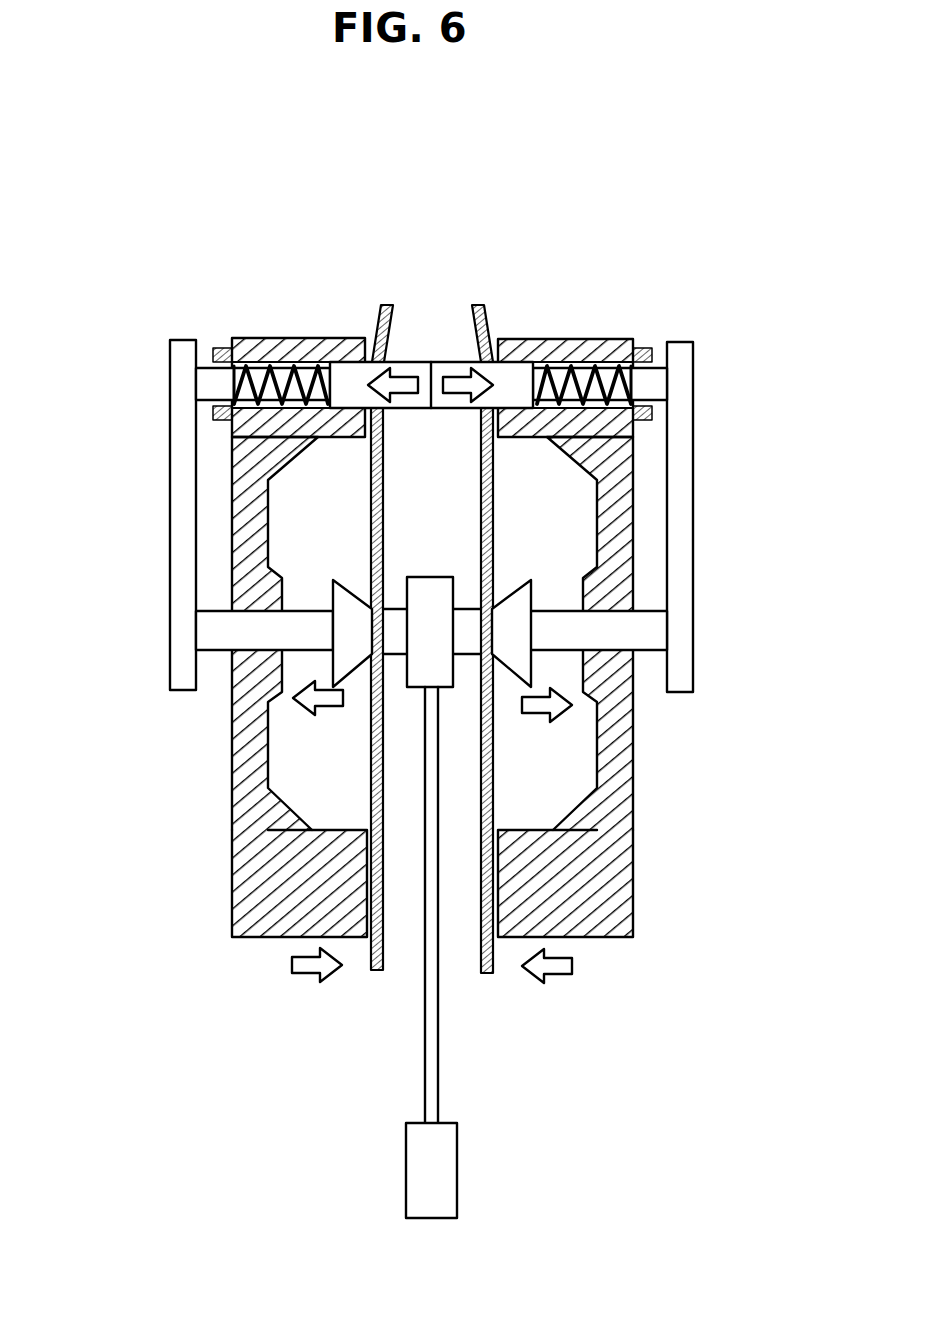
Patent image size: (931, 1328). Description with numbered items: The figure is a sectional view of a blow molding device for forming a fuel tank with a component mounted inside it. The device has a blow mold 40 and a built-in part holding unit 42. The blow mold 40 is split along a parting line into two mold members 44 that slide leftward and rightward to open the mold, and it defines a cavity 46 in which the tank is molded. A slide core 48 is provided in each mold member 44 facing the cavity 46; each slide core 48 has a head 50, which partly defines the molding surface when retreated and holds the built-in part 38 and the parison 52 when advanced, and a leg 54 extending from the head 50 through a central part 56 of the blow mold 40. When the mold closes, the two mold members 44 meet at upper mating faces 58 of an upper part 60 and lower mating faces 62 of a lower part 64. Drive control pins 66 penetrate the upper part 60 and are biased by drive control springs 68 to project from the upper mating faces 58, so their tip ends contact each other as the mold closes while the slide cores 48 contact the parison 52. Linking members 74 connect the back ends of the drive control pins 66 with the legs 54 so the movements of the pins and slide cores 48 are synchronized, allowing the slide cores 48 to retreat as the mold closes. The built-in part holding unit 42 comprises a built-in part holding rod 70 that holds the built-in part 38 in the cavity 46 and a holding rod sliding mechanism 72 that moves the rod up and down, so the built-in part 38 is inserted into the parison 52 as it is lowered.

The built-in part 38 is at (432, 586).
The blow mold 40 is at (438, 689).
The built-in part holding unit 42 is at (303, 1110).
The mold members 44 is at (440, 633).
The cavity 46 is at (675, 717).
The slide core 48 is at (778, 540).
The head 50 is at (357, 616).
The parison 52 is at (440, 653).
The leg 54 is at (192, 644).
The central part 56 is at (197, 712).
The upper mating faces 58 is at (419, 271).
The upper part 60 is at (432, 308).
The lower mating faces 62 is at (376, 978).
The lower part 64 is at (440, 885).
The drive control pins 66 is at (431, 294).
The drive control springs 68 is at (407, 300).
The built-in part holding rod 70 is at (370, 917).
The holding rod sliding mechanism 72 is at (379, 1170).
The linking members 74 is at (440, 516).